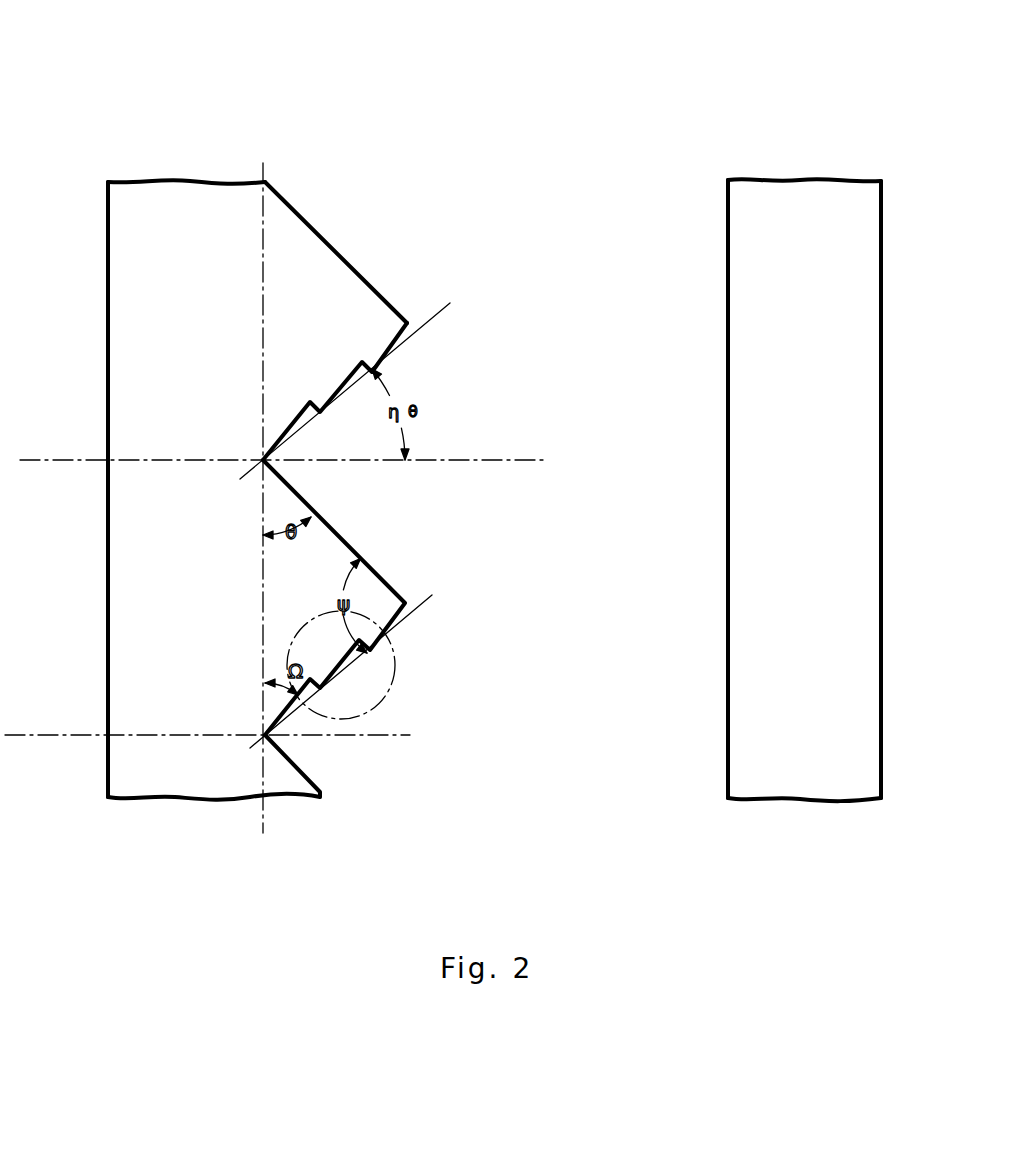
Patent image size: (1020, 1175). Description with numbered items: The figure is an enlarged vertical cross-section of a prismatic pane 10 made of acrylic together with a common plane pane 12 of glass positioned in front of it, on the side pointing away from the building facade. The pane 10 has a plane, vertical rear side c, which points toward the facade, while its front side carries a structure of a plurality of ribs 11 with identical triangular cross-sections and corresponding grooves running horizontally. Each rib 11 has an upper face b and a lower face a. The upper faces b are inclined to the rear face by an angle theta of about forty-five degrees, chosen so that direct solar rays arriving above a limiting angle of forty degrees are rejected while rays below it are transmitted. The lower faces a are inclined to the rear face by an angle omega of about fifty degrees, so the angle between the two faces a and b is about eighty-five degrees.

The pane 10 is at (236, 405).
The rib 11 is at (348, 311).
The common plane pane 12 is at (797, 145).
The lower face a is at (318, 390).
The upper face b is at (362, 275).
The rear side c is at (108, 415).